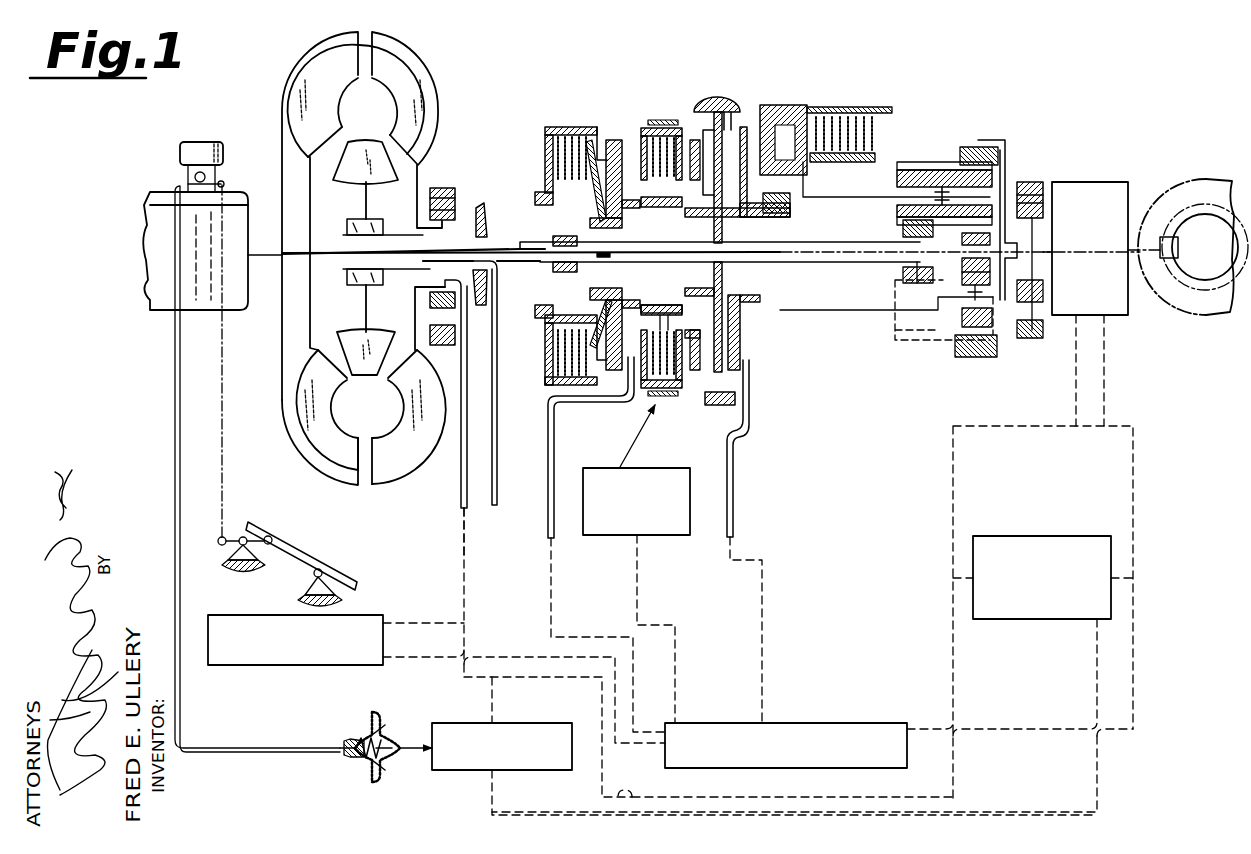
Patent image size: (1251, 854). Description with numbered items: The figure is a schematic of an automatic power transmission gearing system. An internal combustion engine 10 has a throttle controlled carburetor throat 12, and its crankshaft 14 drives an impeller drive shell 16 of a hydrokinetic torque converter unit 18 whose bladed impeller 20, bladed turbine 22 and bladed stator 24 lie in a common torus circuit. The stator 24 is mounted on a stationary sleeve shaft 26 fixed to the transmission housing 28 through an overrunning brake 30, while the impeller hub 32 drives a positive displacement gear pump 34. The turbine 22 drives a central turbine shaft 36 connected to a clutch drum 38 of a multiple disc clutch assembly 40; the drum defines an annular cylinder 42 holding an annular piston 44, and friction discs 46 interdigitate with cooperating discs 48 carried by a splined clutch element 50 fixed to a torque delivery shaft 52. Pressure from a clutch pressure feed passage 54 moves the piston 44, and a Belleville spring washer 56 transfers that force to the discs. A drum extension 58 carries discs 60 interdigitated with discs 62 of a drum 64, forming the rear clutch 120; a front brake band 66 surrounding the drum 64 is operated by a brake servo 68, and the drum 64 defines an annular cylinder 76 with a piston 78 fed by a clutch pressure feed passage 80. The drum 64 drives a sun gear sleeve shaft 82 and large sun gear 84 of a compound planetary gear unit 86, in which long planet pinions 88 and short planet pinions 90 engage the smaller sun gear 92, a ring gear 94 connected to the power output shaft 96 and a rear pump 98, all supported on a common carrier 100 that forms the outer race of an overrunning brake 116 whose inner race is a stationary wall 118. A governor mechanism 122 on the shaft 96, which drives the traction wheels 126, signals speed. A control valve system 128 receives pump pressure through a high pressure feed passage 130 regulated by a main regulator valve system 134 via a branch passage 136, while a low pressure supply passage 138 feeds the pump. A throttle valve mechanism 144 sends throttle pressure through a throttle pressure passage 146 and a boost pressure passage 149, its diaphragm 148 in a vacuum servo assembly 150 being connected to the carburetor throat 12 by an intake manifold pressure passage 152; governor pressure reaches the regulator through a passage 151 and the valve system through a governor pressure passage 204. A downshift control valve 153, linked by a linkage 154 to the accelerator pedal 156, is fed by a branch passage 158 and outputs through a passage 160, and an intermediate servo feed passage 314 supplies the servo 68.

The internal combustion vehicle engine 10 is at (148, 241).
The carburetor throat 12 is at (193, 138).
The engine crankshaft 14 is at (268, 262).
The impeller drive shell 16 is at (316, 52).
The hydrokinetic torque converter unit 18 is at (432, 72).
The bladed impeller 20 is at (388, 60).
The bladed turbine 22 is at (304, 95).
The bladed stator 24 is at (362, 138).
The stationary sleeve shaft 26 is at (398, 238).
The transmission housing 28 is at (487, 280).
The overrunning brake 30 is at (352, 222).
The hub of the impeller 32 is at (418, 185).
The positive displacement gear pump 34 is at (455, 200).
The central turbine shaft 36 is at (393, 284).
The clutch drum 38 is at (566, 130).
The multiple disc clutch assembly 40 is at (548, 125).
The annular cylinder 42 is at (625, 230).
The annular piston 44 is at (590, 222).
The friction discs 46 is at (545, 176).
The cooperating friction discs 48 is at (545, 140).
The externally splined clutch element 50 is at (555, 232).
The torque delivery shaft 52 is at (680, 232).
The clutch pressure feed passage 54 is at (546, 490).
The Belleville spring washer 56 is at (590, 200).
The drum extension 58 is at (640, 305).
The externally splined discs 60 is at (668, 318).
The discs 62 is at (645, 388).
The drum 64 is at (680, 128).
The front brake band 66 is at (658, 118).
The fluid pressure operated brake servo 68 is at (608, 538).
The annular cylinder 76 is at (722, 300).
The annular piston 78 is at (703, 380).
The clutch pressure feed passage 80 is at (735, 512).
The sun gear sleeve shaft 82 is at (850, 275).
The sun gear 84 is at (920, 277).
The compound planetary gear unit 86 is at (1005, 120).
The long planet pinions 88 is at (938, 165).
The short planet pinions 90 is at (1010, 320).
The sun gear 92 is at (992, 240).
The ring gear 94 is at (985, 145).
The power output shaft 96 is at (1045, 255).
The rear pump 98 is at (1030, 180).
The common carrier 100 is at (960, 335).
The overrunning brake 116 is at (798, 212).
The stationary wall 118 is at (730, 120).
The rear clutch 120 is at (641, 140).
The fluid pressure governor mechanism 122 is at (1128, 318).
The vehicle traction wheels 126 is at (1205, 316).
The control valve system 128 is at (838, 722).
The high pressure fluid feed passage 130 is at (461, 445).
The main regulator valve system 134 is at (1070, 534).
The branch passage 136 is at (805, 797).
The low pressure fluid supply passage 138 is at (498, 425).
The throttle valve mechanism 144 is at (438, 772).
The throttle pressure passage 146 is at (492, 795).
The flexible diaphragm 148 is at (355, 764).
The boost pressure passage 149 is at (1040, 812).
The vacuum servo assembly 150 is at (365, 725).
The passage 151 is at (1118, 578).
The engine intake manifold pressure passage 152 is at (175, 370).
The downshift control valve 153 is at (368, 618).
The linkage 154 is at (222, 603).
The accelerator pedal 156 is at (282, 540).
The branch passage 158 is at (398, 620).
The passage 160 is at (512, 658).
The governor pressure passage 204 is at (1106, 395).
The intermediate servo feed passage 314 is at (640, 577).